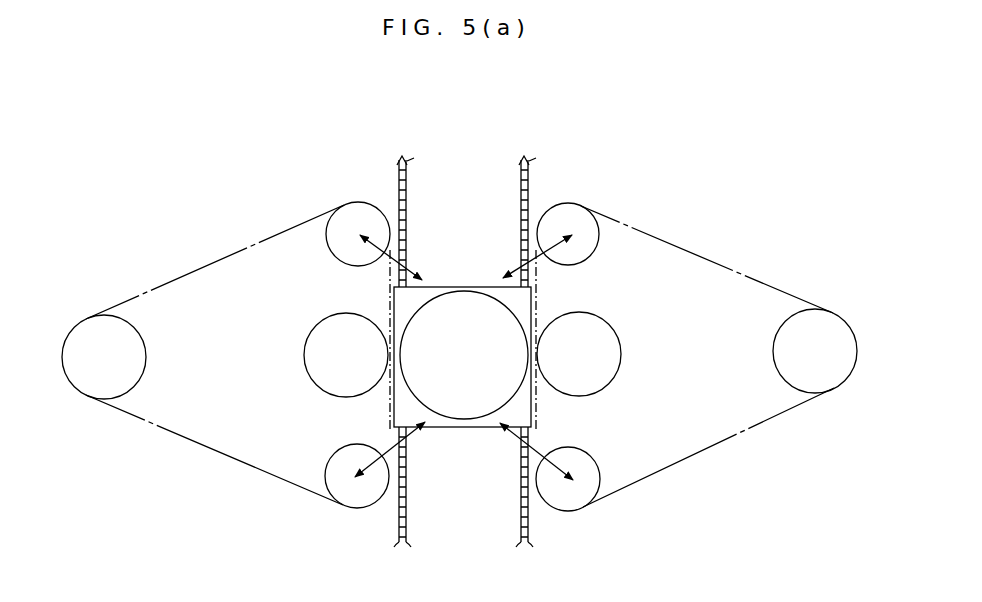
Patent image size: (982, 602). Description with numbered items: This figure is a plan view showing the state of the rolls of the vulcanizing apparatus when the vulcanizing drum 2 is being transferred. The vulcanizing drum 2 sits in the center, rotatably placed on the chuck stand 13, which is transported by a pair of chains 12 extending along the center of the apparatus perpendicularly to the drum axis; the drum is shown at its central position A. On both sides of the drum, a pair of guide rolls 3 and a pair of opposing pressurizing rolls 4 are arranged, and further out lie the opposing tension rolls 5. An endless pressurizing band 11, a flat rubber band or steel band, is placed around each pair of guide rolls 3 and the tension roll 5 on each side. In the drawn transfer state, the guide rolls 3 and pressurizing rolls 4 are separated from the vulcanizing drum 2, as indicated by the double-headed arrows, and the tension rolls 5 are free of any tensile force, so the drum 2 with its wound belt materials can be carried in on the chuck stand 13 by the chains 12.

The vulcanizing drum 2 is at (480, 300).
The guide rolls 3 is at (362, 210).
The pressurizing rolls 4 is at (327, 328).
The tension rolls 5 is at (95, 382).
The pressurizing band 11 is at (222, 258).
The chains 12 is at (410, 187).
The chuck stand 13 is at (440, 425).
The position A is at (473, 424).